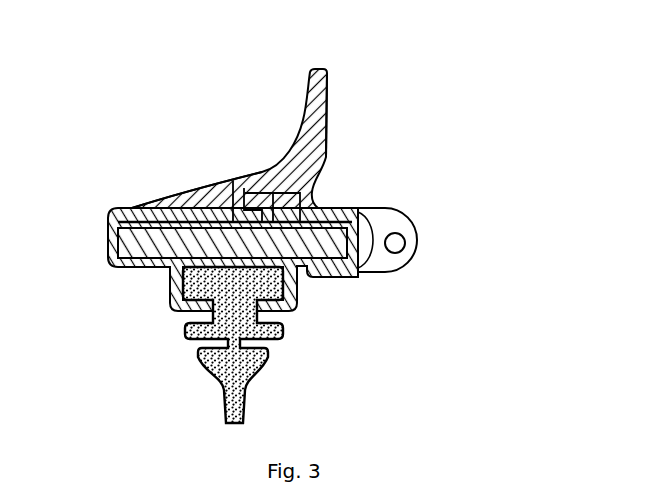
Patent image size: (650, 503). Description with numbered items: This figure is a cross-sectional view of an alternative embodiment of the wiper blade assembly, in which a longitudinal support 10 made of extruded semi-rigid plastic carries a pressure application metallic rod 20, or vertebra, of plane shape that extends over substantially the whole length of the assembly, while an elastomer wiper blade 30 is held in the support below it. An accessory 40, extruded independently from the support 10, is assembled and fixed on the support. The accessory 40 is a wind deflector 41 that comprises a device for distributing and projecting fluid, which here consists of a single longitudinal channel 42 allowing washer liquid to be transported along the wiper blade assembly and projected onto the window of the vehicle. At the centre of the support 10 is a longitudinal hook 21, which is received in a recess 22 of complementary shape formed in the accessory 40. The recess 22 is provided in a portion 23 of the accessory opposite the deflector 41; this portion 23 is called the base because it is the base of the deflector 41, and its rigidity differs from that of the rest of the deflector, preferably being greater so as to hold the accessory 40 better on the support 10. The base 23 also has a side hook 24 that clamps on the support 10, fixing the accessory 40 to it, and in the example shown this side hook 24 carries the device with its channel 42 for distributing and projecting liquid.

The longitudinal support 10 is at (128, 264).
The pressure application metallic rod 20 is at (320, 279).
The longitudinal hook 21 is at (247, 200).
The recess 22 is at (323, 175).
The base 23 is at (160, 207).
The side hook 24 is at (397, 272).
The elastomer wiper blade 30 is at (244, 413).
The accessory 40 is at (307, 109).
The wind deflector 41 is at (322, 97).
The longitudinal channel 42 is at (392, 213).